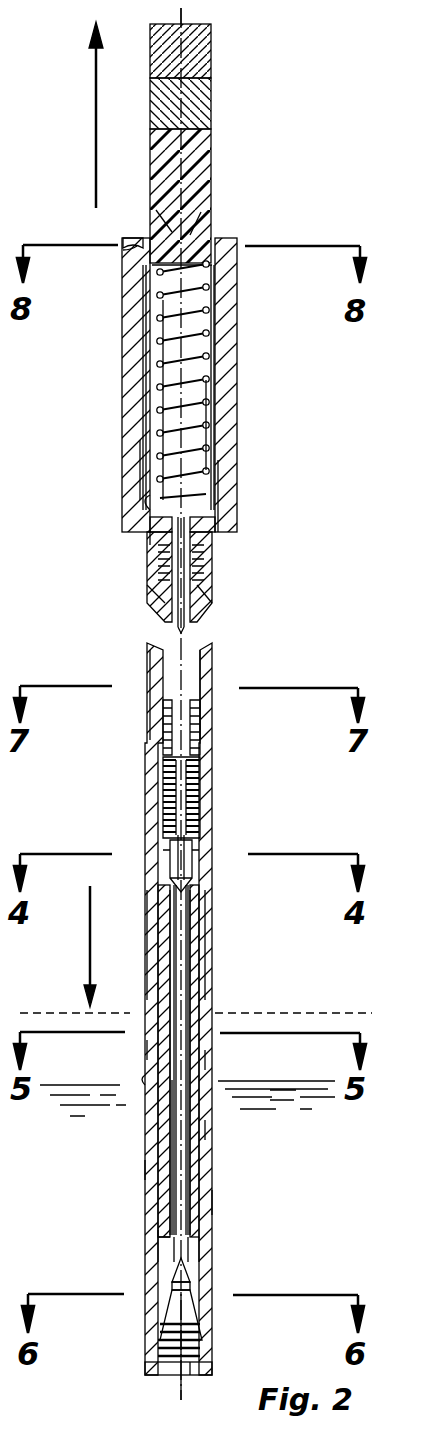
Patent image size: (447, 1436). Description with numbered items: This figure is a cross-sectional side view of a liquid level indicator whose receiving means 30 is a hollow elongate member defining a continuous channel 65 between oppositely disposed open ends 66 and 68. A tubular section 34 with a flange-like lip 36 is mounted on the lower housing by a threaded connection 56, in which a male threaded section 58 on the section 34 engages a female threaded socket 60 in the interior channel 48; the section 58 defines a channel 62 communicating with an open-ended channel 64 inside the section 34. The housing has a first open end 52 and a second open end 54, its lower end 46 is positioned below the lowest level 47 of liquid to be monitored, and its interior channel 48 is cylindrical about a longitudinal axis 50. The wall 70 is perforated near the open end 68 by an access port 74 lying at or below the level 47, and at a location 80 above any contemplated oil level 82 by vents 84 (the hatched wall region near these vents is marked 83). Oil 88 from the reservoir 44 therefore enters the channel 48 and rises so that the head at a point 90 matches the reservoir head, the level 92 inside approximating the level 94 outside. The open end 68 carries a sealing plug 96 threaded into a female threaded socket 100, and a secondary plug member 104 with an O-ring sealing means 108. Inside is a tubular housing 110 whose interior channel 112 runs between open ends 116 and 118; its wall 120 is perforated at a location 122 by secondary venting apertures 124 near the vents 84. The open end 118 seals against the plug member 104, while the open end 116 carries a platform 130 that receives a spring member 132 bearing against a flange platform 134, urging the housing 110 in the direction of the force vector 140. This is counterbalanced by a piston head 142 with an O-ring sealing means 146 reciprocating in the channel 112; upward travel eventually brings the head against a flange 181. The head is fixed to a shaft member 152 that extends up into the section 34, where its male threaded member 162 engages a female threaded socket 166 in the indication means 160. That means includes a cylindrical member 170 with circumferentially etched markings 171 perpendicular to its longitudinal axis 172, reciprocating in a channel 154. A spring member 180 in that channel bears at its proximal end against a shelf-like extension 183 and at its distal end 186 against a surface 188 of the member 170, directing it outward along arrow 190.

The receiving means 30 is at (146, 660).
The tubular section 34 is at (228, 443).
The flange-like lip 36 is at (212, 539).
The reservoir 44 is at (271, 1207).
The bottom end cap 46 is at (154, 1377).
The lowest level of liquid 47 is at (270, 1082).
The interior channel 48 is at (192, 1272).
The longitudinal axis 50 is at (199, 1168).
The first open end 52 is at (150, 544).
The second open end 54 is at (198, 1354).
The threaded connection 56 is at (204, 567).
The male threaded section 58 is at (160, 570).
The female threaded socket 60 is at (204, 591).
The channel 62 is at (156, 595).
The open-ended channel 64 is at (140, 465).
The channel 65 is at (205, 333).
The open end 66 is at (132, 242).
The open end 68 is at (176, 1376).
The wall 70 is at (148, 1050).
The access port 74 is at (158, 1254).
The location 80 is at (197, 953).
The contemplated oil level 82 is at (308, 1000).
The bottom wall 83 is at (218, 508).
The vent 84 is at (218, 476).
The oil 88 is at (112, 1171).
The point 90 is at (184, 1324).
The level of oil within the channel 92 is at (146, 1082).
The level of oil in the reservoir 94 is at (286, 1088).
The sealing plug 96 is at (192, 1372).
The female threaded socket 100 is at (205, 1327).
The secondary plug member 104 is at (172, 1283).
The sealing means 108 is at (191, 1290).
The tubular housing 110 is at (202, 1064).
The interior channel 112 is at (201, 1133).
The open end 116 is at (200, 830).
The open end 118 is at (158, 1238).
The wall 120 is at (192, 997).
The location 122 is at (190, 927).
The secondary venting aperture 124 is at (195, 966).
The platform 130 is at (160, 834).
The spring member 132 is at (200, 796).
The flange platform 134 is at (200, 751).
The directioned force vector 140 is at (94, 938).
The piston head 142 is at (192, 871).
The sealing means 146 is at (163, 874).
The shaft member 152 is at (185, 642).
The channel 154 is at (204, 402).
The indication means 160 is at (211, 163).
The male threaded member 162 is at (199, 229).
The female threaded socket 166 is at (151, 206).
The cylindrical member 170 is at (211, 118).
The circumferentially etched markings 171 is at (211, 49).
The longitudinal axis 172 is at (181, 14).
The spring member 180 is at (160, 388).
The flange 181 is at (185, 845).
The shelf-like extension 183 is at (150, 502).
The distal end 186 is at (214, 265).
The surface 188 is at (136, 271).
The arrow 190 is at (94, 104).